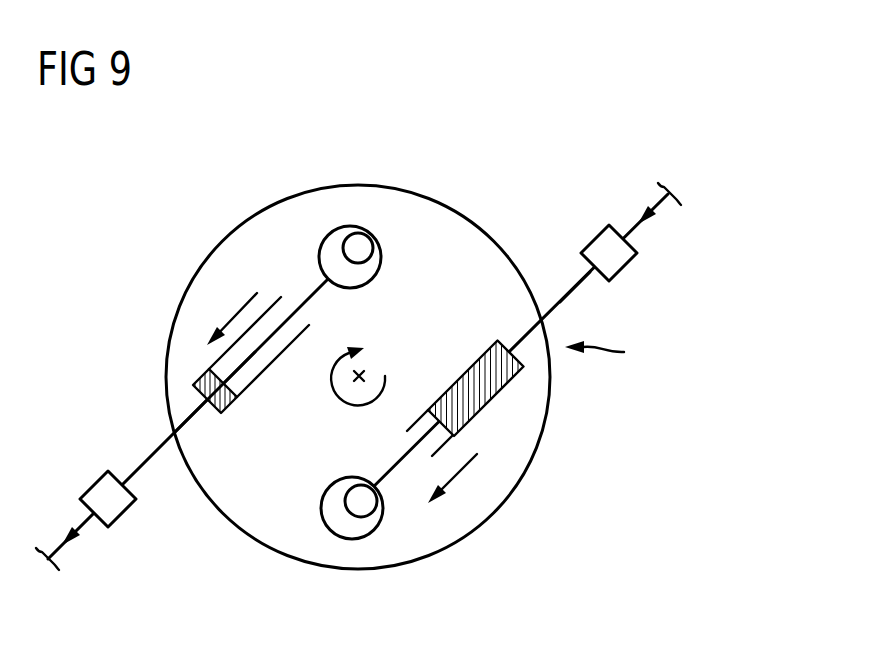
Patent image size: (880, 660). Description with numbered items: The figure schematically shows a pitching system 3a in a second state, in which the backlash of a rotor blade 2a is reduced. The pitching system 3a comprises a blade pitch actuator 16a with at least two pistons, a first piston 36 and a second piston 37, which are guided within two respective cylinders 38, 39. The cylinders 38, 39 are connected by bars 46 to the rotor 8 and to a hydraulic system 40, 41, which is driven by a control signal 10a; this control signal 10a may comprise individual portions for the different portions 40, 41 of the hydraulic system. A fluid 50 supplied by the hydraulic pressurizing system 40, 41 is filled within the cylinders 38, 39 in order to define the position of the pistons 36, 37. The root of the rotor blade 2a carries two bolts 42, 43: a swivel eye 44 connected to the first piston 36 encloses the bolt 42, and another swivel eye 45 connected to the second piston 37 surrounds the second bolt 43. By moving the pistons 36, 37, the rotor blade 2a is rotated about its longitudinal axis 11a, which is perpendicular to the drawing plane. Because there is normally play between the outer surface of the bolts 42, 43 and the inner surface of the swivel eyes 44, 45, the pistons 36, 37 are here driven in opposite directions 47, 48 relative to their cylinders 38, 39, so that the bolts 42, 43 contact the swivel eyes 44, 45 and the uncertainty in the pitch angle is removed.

The rotor blade 2a is at (477, 229).
The pitching system 3a is at (552, 133).
The rotor 8 is at (265, 185).
The control signal 10a is at (73, 535).
The longitudinal axis 11a is at (361, 370).
The blade pitch actuator 16a is at (619, 355).
The first piston 36 is at (397, 465).
The second piston 37 is at (317, 290).
The cylinder 38 is at (464, 374).
The cylinder 39 is at (262, 371).
The hydraulic system portion 40 is at (593, 238).
The hydraulic system portion 41 is at (121, 514).
The bolt 42 is at (359, 518).
The second bolt 43 is at (348, 236).
The swivel eye 44 is at (335, 482).
The swivel eye 45 is at (381, 269).
The bars 46 is at (574, 288).
The direction 47 is at (457, 477).
The direction 48 is at (232, 317).
The fluid 50 is at (224, 408).